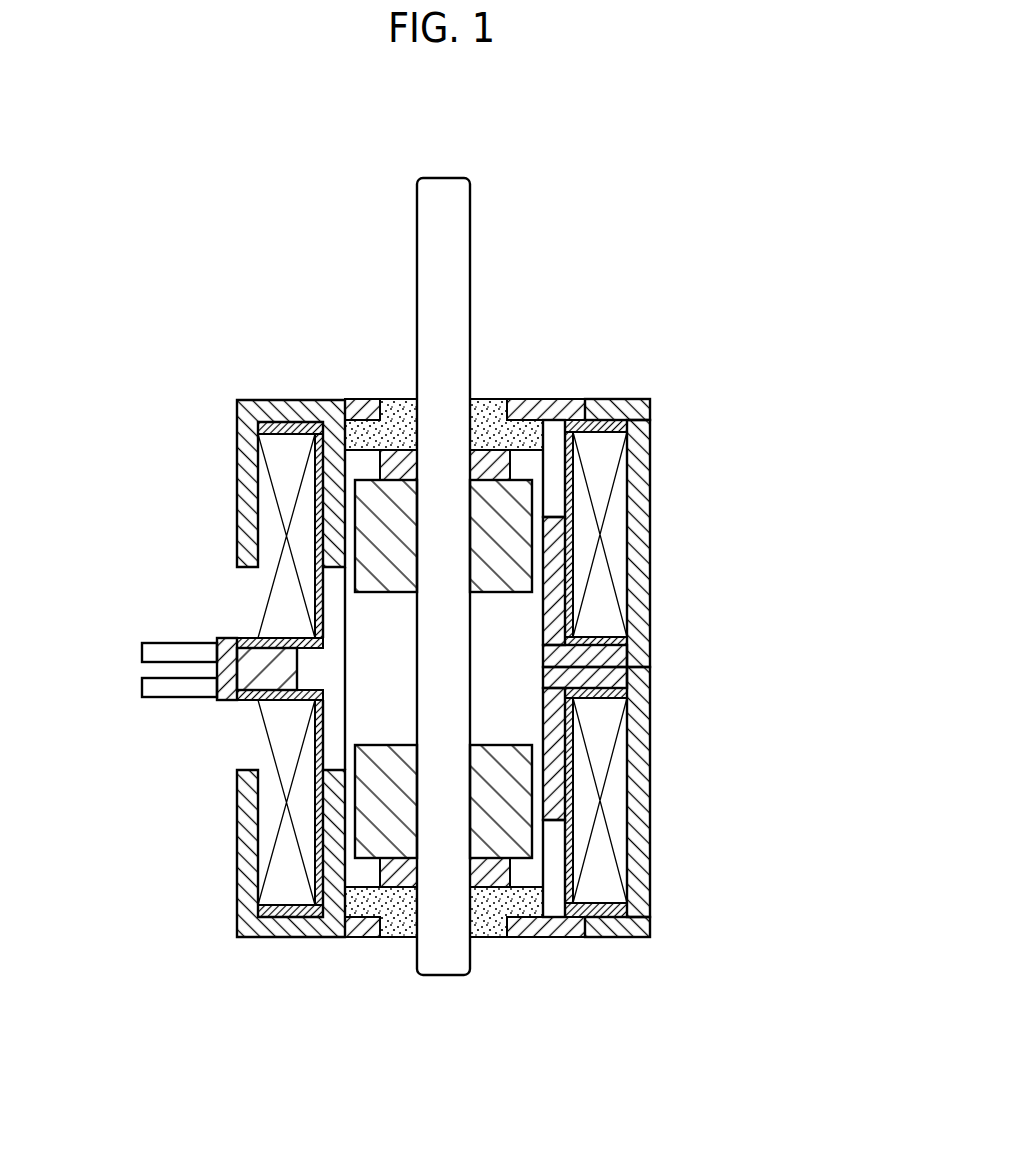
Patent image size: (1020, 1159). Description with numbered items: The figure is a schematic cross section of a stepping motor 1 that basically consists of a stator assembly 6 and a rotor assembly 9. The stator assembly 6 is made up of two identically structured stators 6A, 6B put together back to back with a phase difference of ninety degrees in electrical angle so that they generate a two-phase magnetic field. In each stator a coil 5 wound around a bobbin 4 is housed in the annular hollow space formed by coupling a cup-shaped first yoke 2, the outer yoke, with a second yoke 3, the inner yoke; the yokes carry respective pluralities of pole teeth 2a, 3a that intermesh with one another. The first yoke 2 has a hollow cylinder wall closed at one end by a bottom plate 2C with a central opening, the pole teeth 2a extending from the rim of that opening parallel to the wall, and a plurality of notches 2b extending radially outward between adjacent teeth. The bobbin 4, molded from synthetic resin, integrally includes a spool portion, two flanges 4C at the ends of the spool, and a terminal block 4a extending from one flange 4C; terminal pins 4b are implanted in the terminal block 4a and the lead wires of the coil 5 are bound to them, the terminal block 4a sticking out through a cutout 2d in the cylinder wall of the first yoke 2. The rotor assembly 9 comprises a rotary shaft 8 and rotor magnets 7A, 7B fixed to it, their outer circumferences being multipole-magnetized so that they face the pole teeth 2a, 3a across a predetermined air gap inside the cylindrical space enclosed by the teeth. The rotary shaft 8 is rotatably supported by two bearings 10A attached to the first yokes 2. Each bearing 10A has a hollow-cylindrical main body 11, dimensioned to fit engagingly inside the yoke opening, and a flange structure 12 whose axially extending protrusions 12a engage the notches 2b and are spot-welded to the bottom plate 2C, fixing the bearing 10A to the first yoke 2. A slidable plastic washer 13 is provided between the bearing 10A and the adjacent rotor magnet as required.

The stepping motor 1 is at (834, 160).
The first yoke 2 is at (645, 498).
The pole teeth 2a is at (330, 492).
The notches 2b is at (575, 398).
The bottom plate 2C is at (287, 400).
The cutout 2d is at (247, 609).
The second yoke 3 is at (650, 638).
The pole teeth 3a is at (648, 455).
The bobbin 4 is at (640, 398).
The terminal block 4a is at (227, 638).
The terminal pins 4b is at (165, 650).
The flanges 4C is at (246, 400).
The coil 5 is at (610, 543).
The stator assembly 6 is at (812, 452).
The stator 6A is at (733, 350).
The stator 6B is at (733, 718).
The rotor magnet 7A is at (397, 488).
The rotor magnet 7B is at (335, 940).
The rotary shaft 8 is at (438, 975).
The rotor assembly 9 is at (443, 669).
The bearing 10A is at (712, 283).
The main body 11 is at (481, 398).
The flange structure 12 is at (548, 398).
The protrusions 12a is at (548, 938).
The plastic washer 13 is at (304, 400).